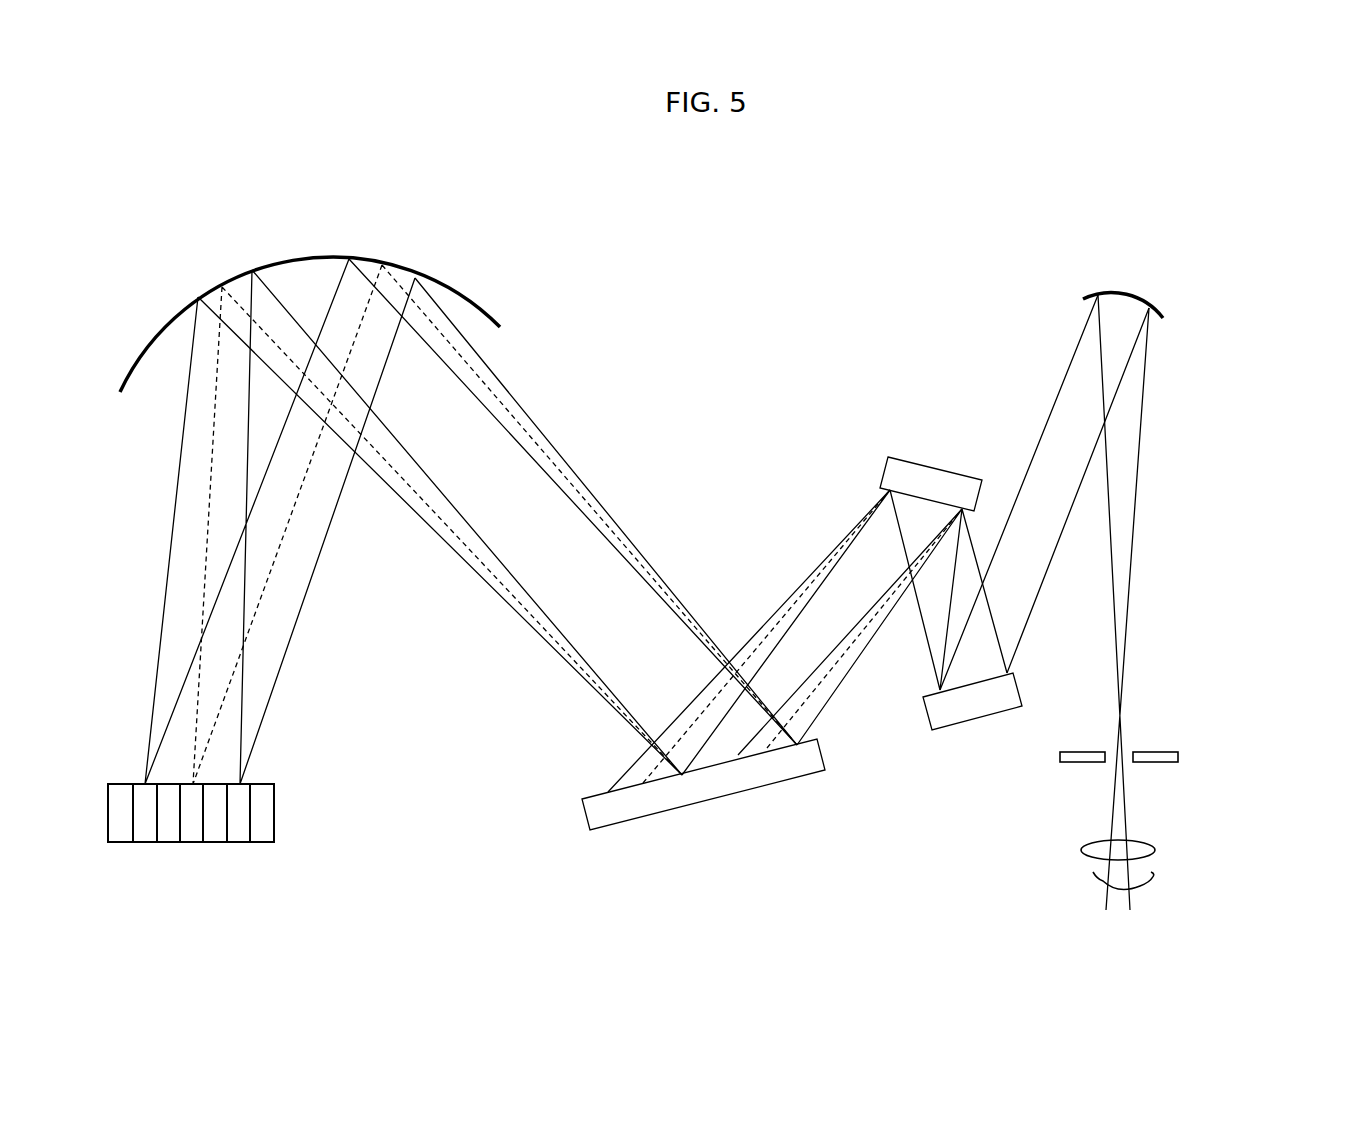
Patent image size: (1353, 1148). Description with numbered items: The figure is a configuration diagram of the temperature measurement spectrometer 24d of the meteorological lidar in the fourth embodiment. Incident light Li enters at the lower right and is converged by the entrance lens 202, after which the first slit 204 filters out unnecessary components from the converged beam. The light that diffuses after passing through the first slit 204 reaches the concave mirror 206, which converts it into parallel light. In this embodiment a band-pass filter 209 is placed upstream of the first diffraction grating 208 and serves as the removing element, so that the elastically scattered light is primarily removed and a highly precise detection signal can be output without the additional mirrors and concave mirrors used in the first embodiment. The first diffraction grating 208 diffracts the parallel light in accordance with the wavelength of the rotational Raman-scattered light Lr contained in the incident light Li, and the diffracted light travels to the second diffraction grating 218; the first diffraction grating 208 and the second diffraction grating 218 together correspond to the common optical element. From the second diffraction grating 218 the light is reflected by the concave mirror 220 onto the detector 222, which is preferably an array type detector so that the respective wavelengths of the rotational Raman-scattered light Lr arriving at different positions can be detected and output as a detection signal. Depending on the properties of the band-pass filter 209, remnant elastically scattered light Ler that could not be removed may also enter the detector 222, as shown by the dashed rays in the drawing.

The spectrometer 24d is at (495, 898).
The entrance lens 202 is at (1135, 840).
The first slit 204 is at (1167, 752).
The concave mirror 206 is at (1120, 290).
The first diffraction grating 208 is at (903, 457).
The band-pass filter 209 is at (958, 725).
The second diffraction grating 218 is at (642, 820).
The concave mirror 220 is at (307, 256).
The detector 222 is at (155, 842).
The incident light Li is at (1093, 875).
The rotational Raman-scattered light Lr is at (522, 405).
The remnant elastically scattered light Ler is at (538, 447).